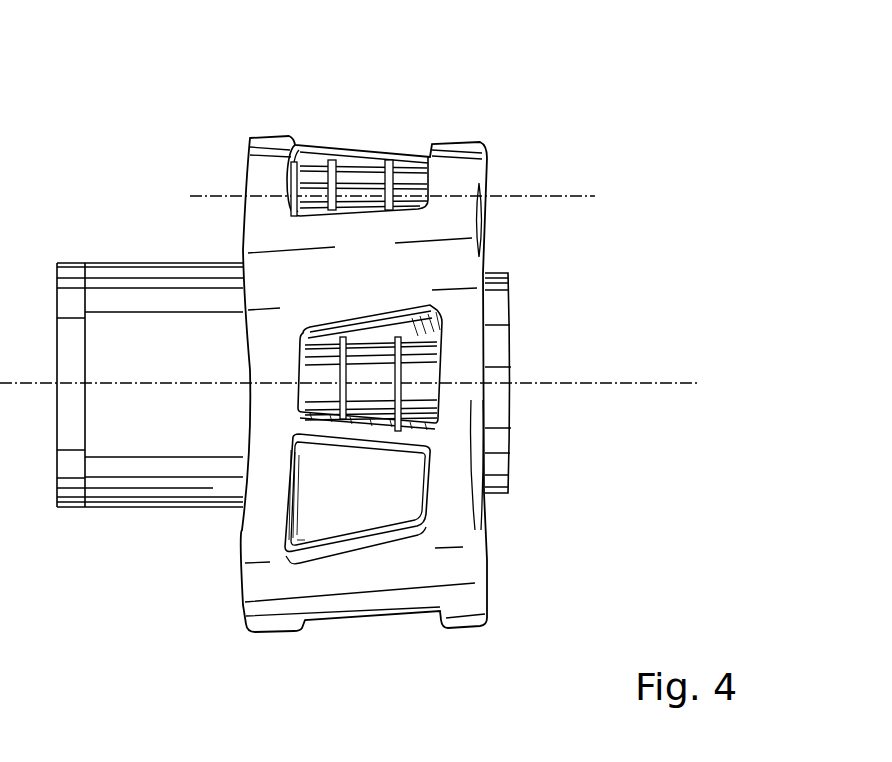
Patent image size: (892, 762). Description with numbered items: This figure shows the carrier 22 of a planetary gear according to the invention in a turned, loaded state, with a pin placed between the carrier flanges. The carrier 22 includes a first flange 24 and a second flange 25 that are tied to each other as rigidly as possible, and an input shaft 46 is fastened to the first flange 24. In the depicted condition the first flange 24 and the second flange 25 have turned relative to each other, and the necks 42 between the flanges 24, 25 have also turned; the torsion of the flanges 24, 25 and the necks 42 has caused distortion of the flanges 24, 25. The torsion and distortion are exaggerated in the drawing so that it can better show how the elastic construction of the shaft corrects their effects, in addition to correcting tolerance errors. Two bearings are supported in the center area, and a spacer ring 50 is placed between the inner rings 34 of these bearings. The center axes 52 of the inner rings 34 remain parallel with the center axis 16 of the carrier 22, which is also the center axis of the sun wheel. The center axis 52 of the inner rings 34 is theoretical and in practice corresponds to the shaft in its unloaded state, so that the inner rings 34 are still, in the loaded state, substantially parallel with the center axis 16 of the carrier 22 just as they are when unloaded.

The center axis 16 is at (533, 383).
The carrier 22 is at (140, 220).
The first flange 24 is at (281, 183).
The second flange 25 is at (465, 185).
The inner rings 34 is at (405, 155).
The necks 42 is at (379, 278).
The input shaft 46 is at (171, 424).
The spacer ring 50 is at (367, 380).
The center axis of the inner rings 52 is at (507, 195).